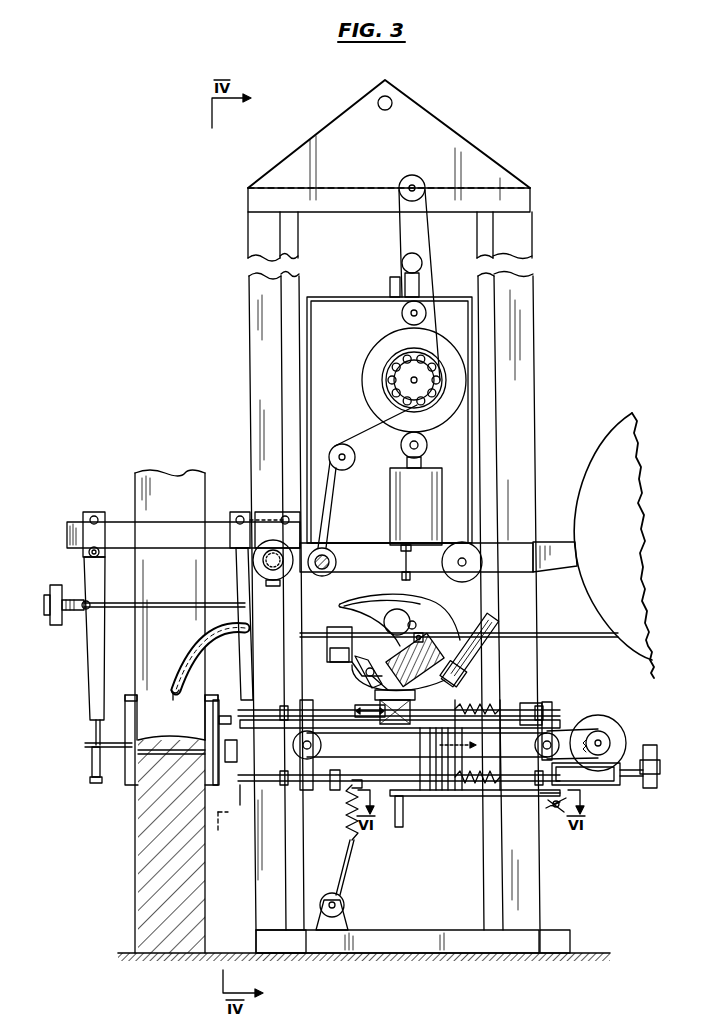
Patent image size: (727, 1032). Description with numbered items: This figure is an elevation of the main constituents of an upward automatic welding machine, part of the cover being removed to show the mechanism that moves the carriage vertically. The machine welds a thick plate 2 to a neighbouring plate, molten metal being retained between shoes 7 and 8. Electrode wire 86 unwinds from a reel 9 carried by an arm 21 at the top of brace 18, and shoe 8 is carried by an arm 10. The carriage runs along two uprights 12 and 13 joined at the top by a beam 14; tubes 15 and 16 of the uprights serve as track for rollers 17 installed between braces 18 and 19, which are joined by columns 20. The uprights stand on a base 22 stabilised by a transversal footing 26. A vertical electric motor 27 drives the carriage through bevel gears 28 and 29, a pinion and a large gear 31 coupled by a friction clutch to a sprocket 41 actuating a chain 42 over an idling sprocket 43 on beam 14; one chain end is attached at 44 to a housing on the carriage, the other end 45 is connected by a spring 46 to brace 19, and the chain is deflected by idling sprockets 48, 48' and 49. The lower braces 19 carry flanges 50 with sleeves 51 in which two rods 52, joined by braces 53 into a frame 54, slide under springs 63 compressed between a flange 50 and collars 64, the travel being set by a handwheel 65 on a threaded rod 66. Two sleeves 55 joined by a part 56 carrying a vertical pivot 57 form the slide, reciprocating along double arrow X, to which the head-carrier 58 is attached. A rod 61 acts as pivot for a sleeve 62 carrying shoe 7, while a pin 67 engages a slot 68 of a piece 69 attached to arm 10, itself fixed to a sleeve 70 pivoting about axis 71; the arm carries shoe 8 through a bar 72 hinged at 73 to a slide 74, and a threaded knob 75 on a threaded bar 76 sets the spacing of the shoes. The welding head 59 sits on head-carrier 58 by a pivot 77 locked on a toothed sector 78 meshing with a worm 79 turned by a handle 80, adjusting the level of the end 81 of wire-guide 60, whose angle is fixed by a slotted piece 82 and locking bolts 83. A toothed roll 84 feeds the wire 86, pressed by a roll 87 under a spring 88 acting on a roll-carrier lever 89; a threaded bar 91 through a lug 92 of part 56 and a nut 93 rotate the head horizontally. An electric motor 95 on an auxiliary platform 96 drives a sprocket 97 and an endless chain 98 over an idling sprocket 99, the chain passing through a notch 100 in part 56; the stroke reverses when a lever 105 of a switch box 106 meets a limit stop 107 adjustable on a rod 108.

The thick plate 2 is at (202, 495).
The shoe 7 is at (212, 785).
The shoe 8 is at (125, 785).
The reel 9 is at (590, 478).
The arm 10 is at (158, 522).
The upright 12 is at (249, 356).
The upright 13 is at (533, 340).
The beam 14 is at (455, 133).
The tube 15 is at (300, 276).
The tube 16 is at (477, 280).
The roller 17 is at (326, 577).
The brace 18 is at (383, 545).
The brace 19 is at (450, 800).
The column 20 is at (295, 610).
The arm 21 is at (553, 542).
The base 22 is at (398, 932).
The transversal footing 26 is at (572, 940).
The electric motor 27 is at (442, 502).
The bevel gear 28 is at (422, 462).
The bevel gear 29 is at (428, 443).
The large gear 31 is at (372, 360).
The sprocket 41 is at (394, 390).
The chain 42 is at (427, 321).
The idling sprocket 43 is at (410, 177).
The chain attachment point 44 is at (394, 291).
The chain end 45 is at (352, 838).
The spring 46 is at (350, 820).
The idling sprocket 48 is at (367, 476).
The idling sprocket 48' is at (330, 546).
The idling sprocket 49 is at (332, 893).
The flange 50 is at (290, 742).
The sleeve 51 is at (276, 712).
The rod 52 is at (540, 700).
The brace 53 is at (552, 708).
The frame 54 is at (415, 696).
The sleeve 55 is at (360, 686).
The part 56 is at (402, 798).
The vertical pivot 57 is at (398, 830).
The head-carrier 58 is at (410, 618).
The welding head 59 is at (418, 622).
The wire-guide 60 is at (190, 650).
The rod 61 is at (246, 795).
The sleeve 62 is at (238, 765).
The spring 63 is at (480, 703).
The collar 64 is at (456, 700).
The small handwheel 65 is at (645, 780).
The threaded rod 66 is at (550, 755).
The pin 67 is at (240, 708).
The slot 68 is at (242, 725).
The piece 69 is at (251, 672).
The sleeve 70 is at (276, 548).
The axis 71 is at (273, 580).
The bar 72 is at (100, 652).
The hinge 73 is at (98, 556).
The slide 74 is at (105, 536).
The threaded knob 75 is at (62, 598).
The threaded bar 76 is at (172, 604).
The pivot 77 is at (388, 670).
The toothed sector 78 is at (410, 672).
The worm 79 is at (458, 670).
The handle 80 is at (478, 640).
The end of wire-guide 81 is at (176, 692).
The piece having a circular slot 82 is at (345, 655).
The locking bolt 83 is at (345, 668).
The toothed roll 84 is at (392, 672).
The fusible wire 86 is at (565, 635).
The roll 87 is at (408, 606).
The spring 88 is at (408, 570).
The roll-carrier lever 89 is at (378, 604).
The threaded bar 91 is at (556, 810).
The lug 92 is at (462, 800).
The nut 93 is at (585, 815).
The electric motor 95 is at (622, 735).
The auxiliary platform 96 is at (615, 785).
The sprocket 97 is at (605, 730).
The endless chain 98 is at (588, 728).
The idling sprocket 99 is at (292, 752).
The notch 100 is at (390, 800).
The lever 105 is at (440, 800).
The box 106 is at (442, 800).
The limit stop 107 is at (456, 800).
The rod 108 is at (450, 735).